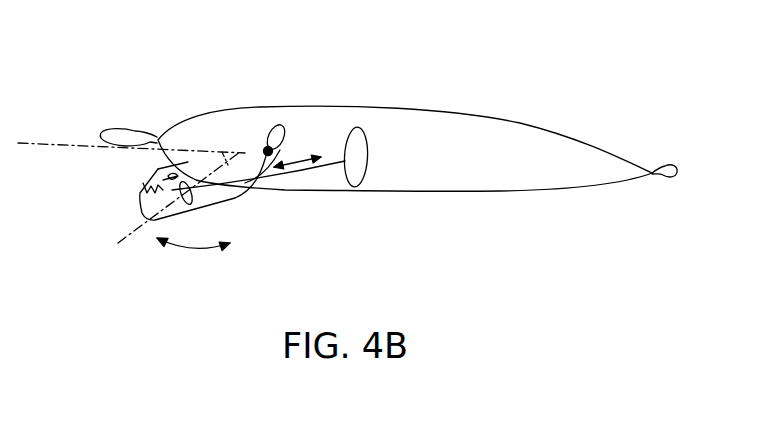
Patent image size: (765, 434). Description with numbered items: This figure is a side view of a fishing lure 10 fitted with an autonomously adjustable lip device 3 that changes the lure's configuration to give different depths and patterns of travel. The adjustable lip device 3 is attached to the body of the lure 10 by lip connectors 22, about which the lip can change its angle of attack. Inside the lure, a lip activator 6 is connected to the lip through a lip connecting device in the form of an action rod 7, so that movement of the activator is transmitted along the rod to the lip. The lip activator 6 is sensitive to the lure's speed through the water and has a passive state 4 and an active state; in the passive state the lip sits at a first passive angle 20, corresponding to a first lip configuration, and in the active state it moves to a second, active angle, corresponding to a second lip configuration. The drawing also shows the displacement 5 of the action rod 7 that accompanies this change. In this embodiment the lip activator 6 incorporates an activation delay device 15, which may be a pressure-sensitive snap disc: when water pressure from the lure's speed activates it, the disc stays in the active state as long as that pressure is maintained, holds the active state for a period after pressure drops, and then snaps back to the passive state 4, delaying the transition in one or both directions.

The lure 10 is at (189, 102).
The first passive angle 20 is at (185, 150).
The adjustable lip device 3 is at (162, 210).
The lip connectors 22 is at (270, 125).
The action rod 7 is at (287, 172).
The displacement arrow 5 is at (296, 152).
The lip activator 6 is at (385, 125).
The activation delay device 15 is at (357, 140).
The passive state 4 is at (196, 250).